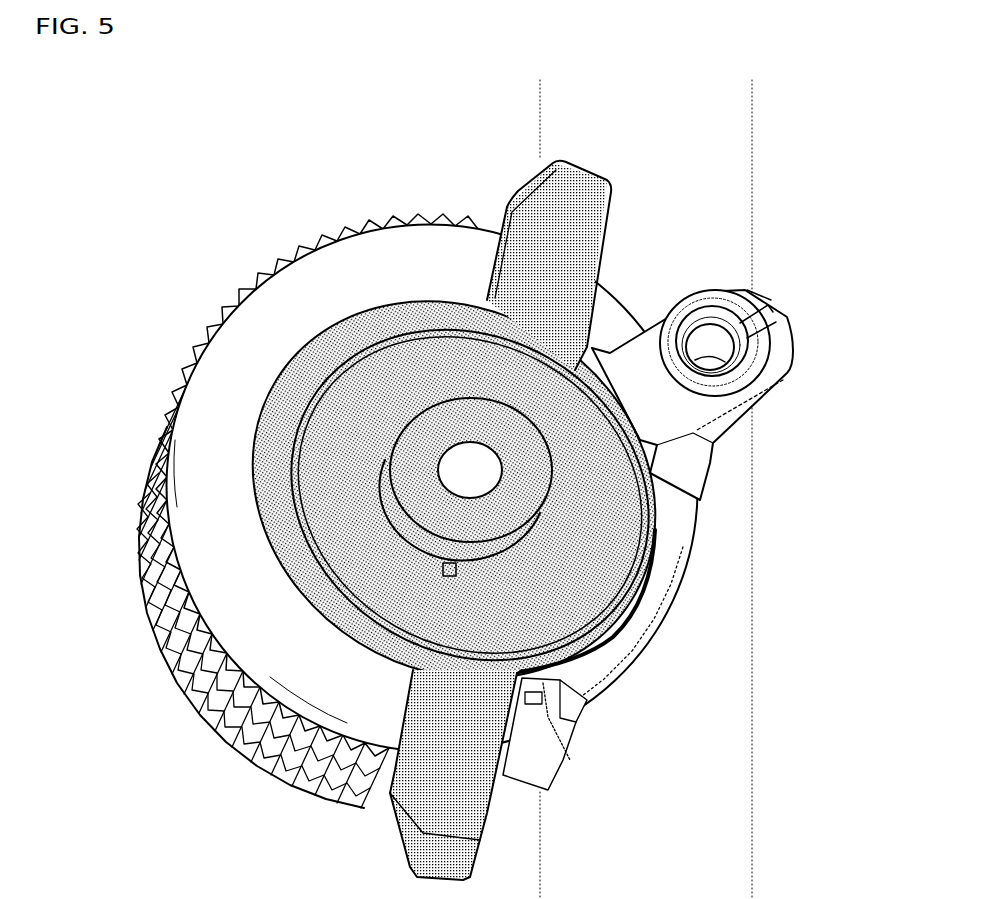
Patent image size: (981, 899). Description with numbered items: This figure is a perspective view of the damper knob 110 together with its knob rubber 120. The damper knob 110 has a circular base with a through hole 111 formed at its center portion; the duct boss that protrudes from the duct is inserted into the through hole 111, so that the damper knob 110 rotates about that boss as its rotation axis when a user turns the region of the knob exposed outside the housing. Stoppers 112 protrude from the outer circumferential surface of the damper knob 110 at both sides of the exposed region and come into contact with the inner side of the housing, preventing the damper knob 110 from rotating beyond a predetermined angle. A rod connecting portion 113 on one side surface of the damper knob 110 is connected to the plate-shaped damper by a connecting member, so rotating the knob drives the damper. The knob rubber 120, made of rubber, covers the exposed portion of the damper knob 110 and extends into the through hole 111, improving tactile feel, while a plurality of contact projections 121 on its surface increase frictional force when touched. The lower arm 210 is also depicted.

The damper knob 110 is at (272, 327).
The through hole 111 is at (476, 481).
The stopper 112 is at (587, 207).
The rod connecting portion 113 is at (743, 297).
The knob rubber 120 is at (261, 523).
The contact projection 121 is at (257, 753).
The lower arm 210 is at (447, 785).